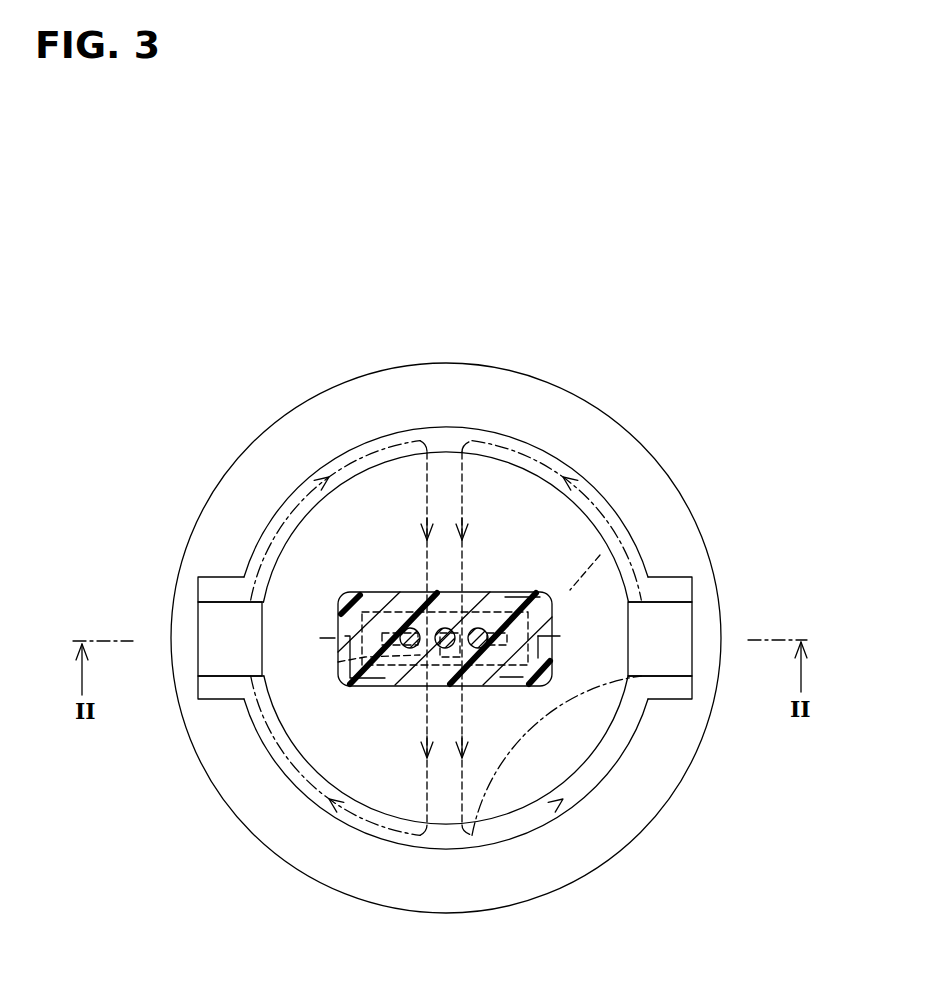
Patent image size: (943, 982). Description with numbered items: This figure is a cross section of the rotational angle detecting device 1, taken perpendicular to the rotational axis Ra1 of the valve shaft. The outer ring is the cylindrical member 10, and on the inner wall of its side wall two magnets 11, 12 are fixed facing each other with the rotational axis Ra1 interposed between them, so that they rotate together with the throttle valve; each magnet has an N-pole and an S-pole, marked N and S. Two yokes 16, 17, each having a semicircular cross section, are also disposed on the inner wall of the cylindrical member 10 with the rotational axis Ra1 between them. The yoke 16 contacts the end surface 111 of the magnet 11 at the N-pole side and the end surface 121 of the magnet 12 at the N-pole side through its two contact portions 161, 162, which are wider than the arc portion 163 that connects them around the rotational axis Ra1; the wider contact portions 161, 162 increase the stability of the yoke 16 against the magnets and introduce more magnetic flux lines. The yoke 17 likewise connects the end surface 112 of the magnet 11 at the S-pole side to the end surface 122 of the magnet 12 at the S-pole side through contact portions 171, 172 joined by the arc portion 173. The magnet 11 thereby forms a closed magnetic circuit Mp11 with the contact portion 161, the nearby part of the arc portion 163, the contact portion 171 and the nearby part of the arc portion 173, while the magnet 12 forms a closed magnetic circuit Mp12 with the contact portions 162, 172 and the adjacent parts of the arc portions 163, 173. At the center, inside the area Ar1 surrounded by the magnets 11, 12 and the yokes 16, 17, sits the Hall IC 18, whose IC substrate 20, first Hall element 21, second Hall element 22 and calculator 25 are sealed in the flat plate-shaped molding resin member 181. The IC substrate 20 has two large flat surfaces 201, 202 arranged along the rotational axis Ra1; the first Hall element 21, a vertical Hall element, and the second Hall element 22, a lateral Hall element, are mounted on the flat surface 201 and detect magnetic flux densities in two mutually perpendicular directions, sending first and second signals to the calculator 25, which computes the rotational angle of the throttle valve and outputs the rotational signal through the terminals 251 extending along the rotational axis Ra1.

The rotational angle detecting device 1 is at (172, 378).
The cylindrical member 10 is at (597, 455).
The magnet 11 is at (207, 632).
The end surface of the magnet at the N-pole side 111 is at (208, 600).
The end surface of the magnet at the S-pole side 112 is at (217, 690).
The magnet 12 is at (683, 660).
The end surface of the magnet at the N-pole side 121 is at (683, 592).
The end surface of the magnet at the S-pole side 122 is at (684, 695).
The yoke 16 is at (310, 462).
The contact portion 161 is at (229, 595).
The contact portion 162 is at (657, 595).
The arc portion 163 is at (437, 440).
The yoke 17 is at (310, 818).
The contact portion 171 is at (232, 696).
The contact portion 172 is at (660, 697).
The arc portion 173 is at (455, 845).
The Hall IC 18 is at (351, 598).
The molding resin member 181 is at (600, 555).
The IC substrate 20 is at (553, 612).
The flat surface 201 is at (517, 687).
The flat surface 202 is at (520, 597).
The first Hall element 21 is at (336, 641).
The second Hall element 22 is at (463, 688).
The calculator 25 is at (483, 687).
The terminals 251 is at (405, 630).
The area surrounded by the magnets and the yokes Ar1 is at (400, 490).
The rotational axis Ra1 is at (427, 688).
The closed magnetic circuit Mp11 is at (402, 845).
The closed magnetic circuit Mp12 is at (570, 815).